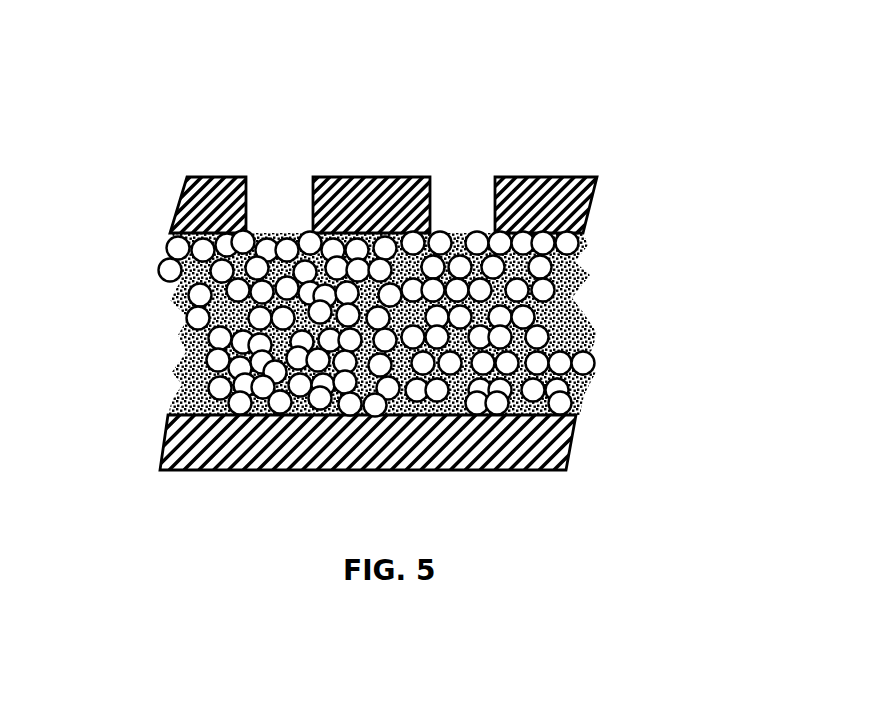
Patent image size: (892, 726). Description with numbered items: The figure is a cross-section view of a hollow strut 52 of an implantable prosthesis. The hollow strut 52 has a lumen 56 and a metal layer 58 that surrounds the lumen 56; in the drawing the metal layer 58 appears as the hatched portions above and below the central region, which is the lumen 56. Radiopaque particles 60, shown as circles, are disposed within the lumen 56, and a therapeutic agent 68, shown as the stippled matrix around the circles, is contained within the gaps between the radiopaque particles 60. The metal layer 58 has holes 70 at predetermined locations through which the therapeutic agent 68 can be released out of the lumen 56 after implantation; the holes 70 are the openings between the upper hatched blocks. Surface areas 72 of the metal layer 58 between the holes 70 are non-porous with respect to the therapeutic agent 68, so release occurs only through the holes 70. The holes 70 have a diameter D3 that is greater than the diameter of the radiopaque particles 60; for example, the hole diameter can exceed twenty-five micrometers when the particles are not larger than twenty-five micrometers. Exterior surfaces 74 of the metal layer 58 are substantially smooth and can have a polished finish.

The hollow strut 52 is at (462, 48).
The lumen 56 is at (365, 388).
The metal layer 58 is at (129, 174).
The radiopaque particles 60 is at (565, 300).
The therapeutic agent 68 is at (585, 340).
The holes 70 is at (279, 188).
The surface areas 72 is at (237, 157).
The exterior surfaces 74 is at (222, 170).
The diameter D3 is at (312, 160).